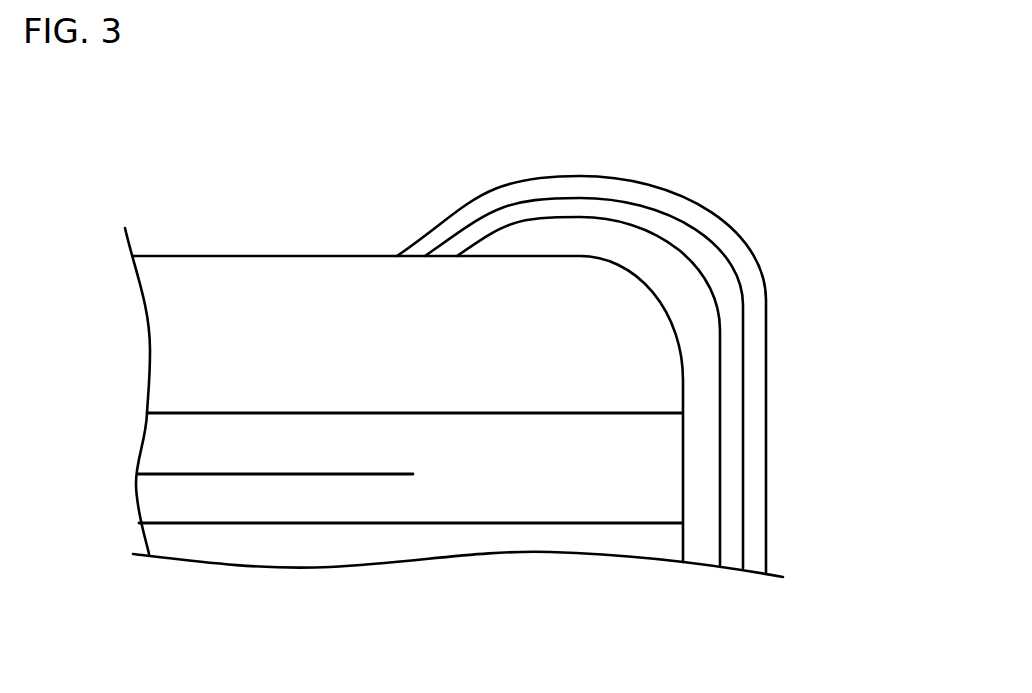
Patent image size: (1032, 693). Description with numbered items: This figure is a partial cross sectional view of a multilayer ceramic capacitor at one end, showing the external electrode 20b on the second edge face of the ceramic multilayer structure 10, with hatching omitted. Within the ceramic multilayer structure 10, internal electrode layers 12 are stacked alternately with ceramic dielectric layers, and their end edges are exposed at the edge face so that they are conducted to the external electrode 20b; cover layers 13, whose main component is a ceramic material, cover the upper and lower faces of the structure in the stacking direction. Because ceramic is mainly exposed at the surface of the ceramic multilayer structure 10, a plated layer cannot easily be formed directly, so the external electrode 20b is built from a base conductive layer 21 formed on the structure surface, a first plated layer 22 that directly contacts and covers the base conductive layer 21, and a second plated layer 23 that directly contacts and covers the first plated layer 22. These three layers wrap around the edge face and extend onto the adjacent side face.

The ceramic multilayer structure 10 is at (165, 212).
The internal electrode layers 12 is at (237, 475).
The cover layers 13 is at (270, 291).
The external electrode 20b is at (862, 305).
The base conductive layer 21 is at (708, 405).
The first plated layer 22 is at (735, 367).
The second plated layer 23 is at (752, 325).